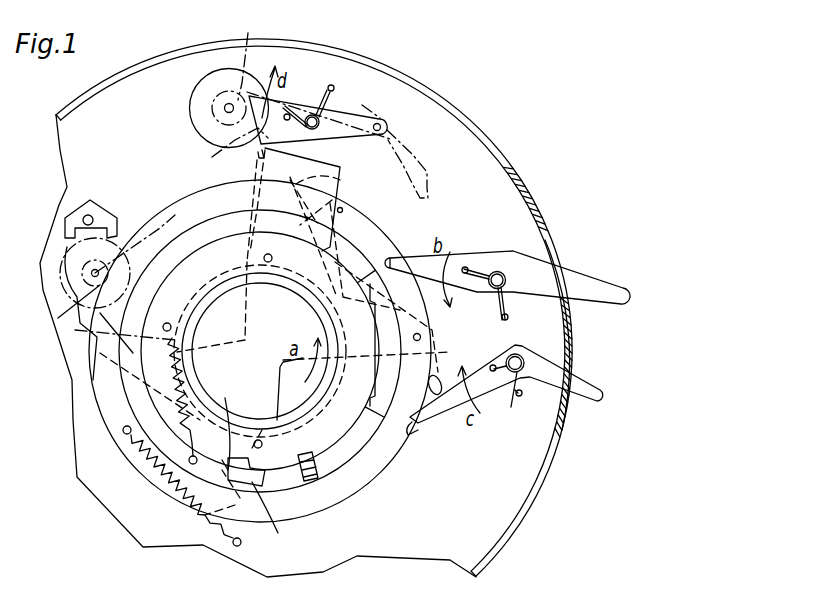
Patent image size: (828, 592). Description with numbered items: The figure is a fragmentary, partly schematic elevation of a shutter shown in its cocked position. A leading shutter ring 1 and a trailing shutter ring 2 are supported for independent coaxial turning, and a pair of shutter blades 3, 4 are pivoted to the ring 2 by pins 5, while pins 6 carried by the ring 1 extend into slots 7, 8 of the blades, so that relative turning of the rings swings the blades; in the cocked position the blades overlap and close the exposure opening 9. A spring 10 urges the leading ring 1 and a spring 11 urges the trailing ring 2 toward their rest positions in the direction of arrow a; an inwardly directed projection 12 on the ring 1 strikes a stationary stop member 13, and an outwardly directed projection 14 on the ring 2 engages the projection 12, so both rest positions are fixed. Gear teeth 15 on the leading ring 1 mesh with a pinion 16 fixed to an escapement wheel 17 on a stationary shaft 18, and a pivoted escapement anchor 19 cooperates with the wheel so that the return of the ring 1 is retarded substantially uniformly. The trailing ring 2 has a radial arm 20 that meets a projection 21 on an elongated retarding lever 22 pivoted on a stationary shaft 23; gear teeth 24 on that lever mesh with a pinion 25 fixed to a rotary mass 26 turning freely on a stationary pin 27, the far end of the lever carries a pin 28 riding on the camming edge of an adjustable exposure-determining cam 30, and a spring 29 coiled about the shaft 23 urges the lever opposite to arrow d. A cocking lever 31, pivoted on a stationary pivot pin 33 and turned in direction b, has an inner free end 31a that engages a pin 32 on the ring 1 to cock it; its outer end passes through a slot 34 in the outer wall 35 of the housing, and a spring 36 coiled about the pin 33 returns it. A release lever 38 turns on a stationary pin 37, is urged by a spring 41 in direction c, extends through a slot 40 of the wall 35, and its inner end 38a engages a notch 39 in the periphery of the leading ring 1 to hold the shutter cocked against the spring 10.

The leading shutter ring 1 is at (372, 471).
The trailing shutter ring 2 is at (323, 448).
The shutter blade 3 is at (337, 247).
The shutter blade 4 is at (283, 480).
The pins 5 is at (264, 258).
The pins 6 is at (343, 209).
The slot 7 is at (295, 188).
The slot 8 is at (237, 505).
The opening 9 is at (205, 383).
The spring 10 is at (154, 472).
The spring 11 is at (168, 322).
The inwardly directed projection 12 is at (271, 520).
The stationary stop member 13 is at (306, 458).
The outwardly directed projection 14 is at (228, 412).
The gear teeth 15 is at (152, 232).
The pinion 16 is at (62, 308).
The escapement wheel 17 is at (60, 262).
The stationary shaft 18 is at (118, 265).
The escapement anchor 19 is at (65, 222).
The arm 20 is at (341, 170).
The projection 21 is at (257, 154).
The retarding lever 22 is at (345, 112).
The stationary shaft 23 is at (310, 114).
The gear teeth 24 is at (229, 153).
The pinion 25 is at (249, 54).
The rotary mass 26 is at (204, 68).
The stationary pin 27 is at (224, 107).
The pin 28 is at (383, 122).
The spring 29 is at (327, 85).
The exposure-determining cam 30 is at (423, 160).
The cocking lever 31 is at (520, 260).
The inner free end 31a is at (393, 257).
The pin 32 is at (421, 337).
The stationary pivot pin 33 is at (496, 272).
The slot 34 is at (561, 262).
The outer wall 35 is at (520, 168).
The spring 36 is at (508, 314).
The stationary pin 37 is at (522, 360).
The release lever 38 is at (485, 364).
The inner end 38a is at (438, 423).
The notch 39 is at (415, 433).
The slot 40 is at (572, 350).
The spring 41 is at (511, 400).